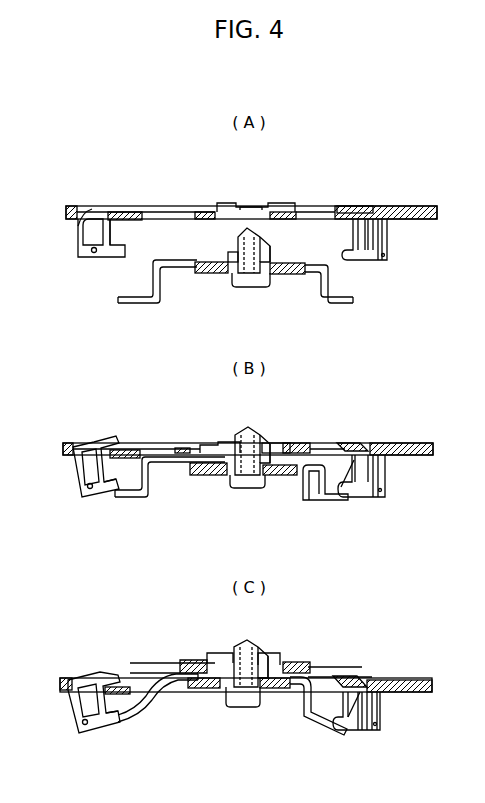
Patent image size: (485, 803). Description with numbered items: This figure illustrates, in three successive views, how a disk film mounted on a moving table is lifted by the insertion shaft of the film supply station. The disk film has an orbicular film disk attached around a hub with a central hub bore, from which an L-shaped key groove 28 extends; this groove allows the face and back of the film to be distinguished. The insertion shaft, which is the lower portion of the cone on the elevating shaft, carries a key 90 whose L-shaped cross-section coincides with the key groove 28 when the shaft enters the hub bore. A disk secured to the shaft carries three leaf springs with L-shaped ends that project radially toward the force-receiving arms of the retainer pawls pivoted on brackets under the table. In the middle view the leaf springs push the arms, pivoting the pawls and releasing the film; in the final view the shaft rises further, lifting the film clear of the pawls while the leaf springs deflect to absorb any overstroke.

The key groove 28 is at (256, 205).
The key 90 is at (263, 656).